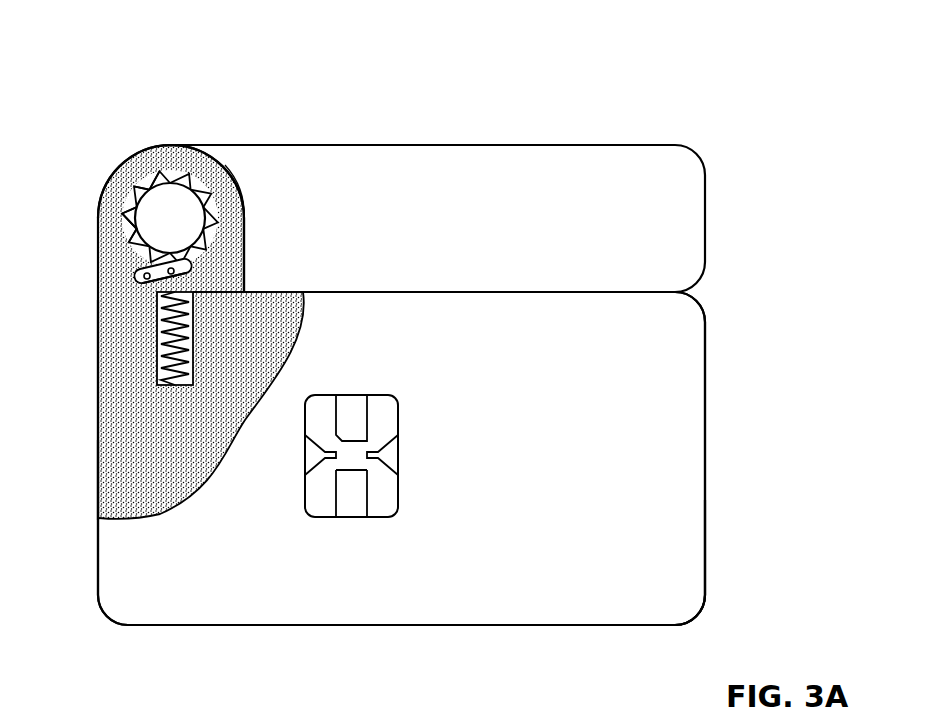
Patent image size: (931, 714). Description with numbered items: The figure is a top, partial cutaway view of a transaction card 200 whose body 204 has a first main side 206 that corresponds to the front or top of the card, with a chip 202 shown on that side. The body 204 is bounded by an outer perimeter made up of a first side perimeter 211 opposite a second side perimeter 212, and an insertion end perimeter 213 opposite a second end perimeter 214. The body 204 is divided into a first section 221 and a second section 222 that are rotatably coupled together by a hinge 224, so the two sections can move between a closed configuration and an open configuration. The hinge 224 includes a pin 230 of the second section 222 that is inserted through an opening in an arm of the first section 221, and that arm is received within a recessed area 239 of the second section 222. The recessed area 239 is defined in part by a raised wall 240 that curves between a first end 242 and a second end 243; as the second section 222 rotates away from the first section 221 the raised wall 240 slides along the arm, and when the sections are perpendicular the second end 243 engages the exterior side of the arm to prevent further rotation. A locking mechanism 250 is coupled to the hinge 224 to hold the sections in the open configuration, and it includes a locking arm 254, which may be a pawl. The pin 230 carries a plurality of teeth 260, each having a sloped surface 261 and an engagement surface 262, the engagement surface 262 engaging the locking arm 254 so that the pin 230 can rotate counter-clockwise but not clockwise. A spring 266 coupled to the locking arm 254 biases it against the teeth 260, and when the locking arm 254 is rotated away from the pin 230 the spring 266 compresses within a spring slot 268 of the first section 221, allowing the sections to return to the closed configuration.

The transaction card 200 is at (798, 50).
The chip 202 is at (383, 397).
The body 204 is at (724, 459).
The first main side 206 is at (690, 580).
The first side perimeter 211 is at (98, 480).
The second side perimeter 212 is at (704, 530).
The insertion end perimeter 213 is at (568, 625).
The second end perimeter 214 is at (420, 145).
The first section 221 is at (225, 614).
The second section 222 is at (642, 168).
The hinge 224 is at (133, 220).
The pin 230 is at (182, 197).
The recessed area 239 is at (153, 152).
The raised wall 240 is at (254, 208).
The first end 242 is at (246, 278).
The second end 243 is at (233, 181).
The locking mechanism 250 is at (133, 301).
The locking arm 254 is at (140, 274).
The teeth 260 is at (171, 174).
The sloped surface 261 is at (127, 199).
The engagement surface 262 is at (132, 192).
The spring 266 is at (157, 373).
The spring slot 268 is at (157, 383).